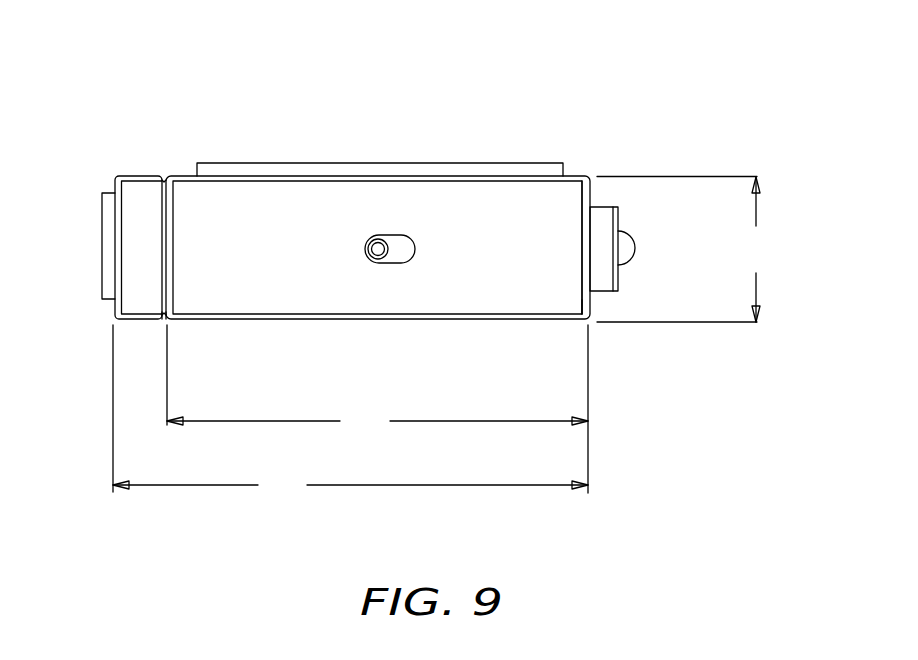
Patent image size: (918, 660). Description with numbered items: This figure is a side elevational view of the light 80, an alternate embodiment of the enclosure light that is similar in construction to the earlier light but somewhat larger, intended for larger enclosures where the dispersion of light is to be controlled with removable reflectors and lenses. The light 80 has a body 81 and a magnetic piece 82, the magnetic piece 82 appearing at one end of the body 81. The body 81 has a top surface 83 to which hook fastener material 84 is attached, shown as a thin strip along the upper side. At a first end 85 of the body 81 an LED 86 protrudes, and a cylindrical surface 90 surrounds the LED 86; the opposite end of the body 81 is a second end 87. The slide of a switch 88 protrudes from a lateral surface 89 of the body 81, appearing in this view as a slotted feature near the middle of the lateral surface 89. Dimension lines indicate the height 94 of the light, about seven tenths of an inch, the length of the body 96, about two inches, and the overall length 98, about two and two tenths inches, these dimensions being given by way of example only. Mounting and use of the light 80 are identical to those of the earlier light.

The light 80 is at (676, 69).
The body 81 is at (297, 287).
The magnetic piece 82 is at (142, 213).
The top surface 83 is at (188, 175).
The hook fastener material 84 is at (265, 170).
The first end 85 is at (590, 305).
The LED 86 is at (625, 247).
The second end 87 is at (178, 321).
The switch 88 is at (380, 245).
The lateral surface 89 is at (500, 195).
The cylindrical surface 90 is at (601, 223).
The height 94 is at (682, 250).
The length of the body 96 is at (377, 409).
The overall length 98 is at (350, 415).